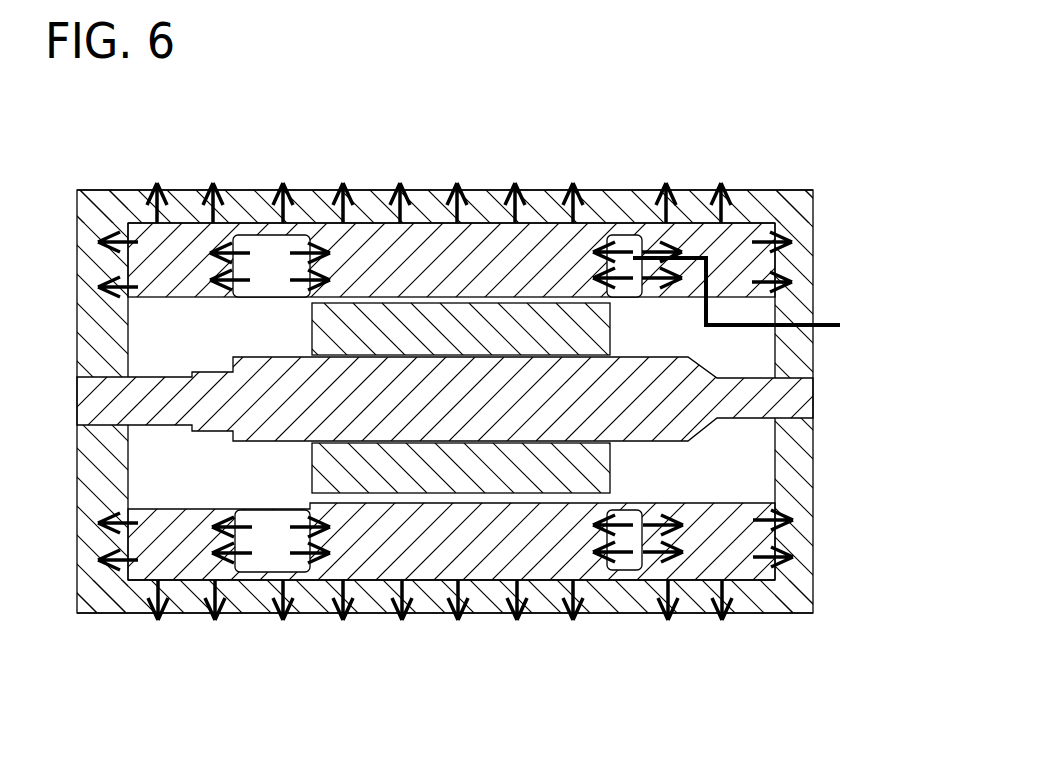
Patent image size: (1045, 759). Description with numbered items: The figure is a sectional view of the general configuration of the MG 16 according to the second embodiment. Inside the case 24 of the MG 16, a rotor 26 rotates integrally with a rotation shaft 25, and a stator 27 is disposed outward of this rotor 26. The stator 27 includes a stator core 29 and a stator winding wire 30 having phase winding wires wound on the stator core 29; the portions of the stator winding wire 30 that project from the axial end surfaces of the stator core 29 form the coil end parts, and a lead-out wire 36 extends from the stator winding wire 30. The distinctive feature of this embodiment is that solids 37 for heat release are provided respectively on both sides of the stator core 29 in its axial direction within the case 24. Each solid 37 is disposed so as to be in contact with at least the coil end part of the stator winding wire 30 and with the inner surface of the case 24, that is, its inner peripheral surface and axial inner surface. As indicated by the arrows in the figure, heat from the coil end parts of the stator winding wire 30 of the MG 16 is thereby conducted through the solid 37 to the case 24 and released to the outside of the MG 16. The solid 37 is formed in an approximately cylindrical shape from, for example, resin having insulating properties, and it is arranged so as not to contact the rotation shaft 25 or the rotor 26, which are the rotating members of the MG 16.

The MG 16 is at (776, 172).
The case 24 is at (598, 187).
The rotation shaft 25 is at (660, 443).
The rotor 26 is at (612, 463).
The stator 27 is at (498, 605).
The stator core 29 is at (425, 570).
The stator winding wire 30 is at (262, 576).
The lead-out wire 36 is at (708, 313).
The solid 37 is at (183, 254).